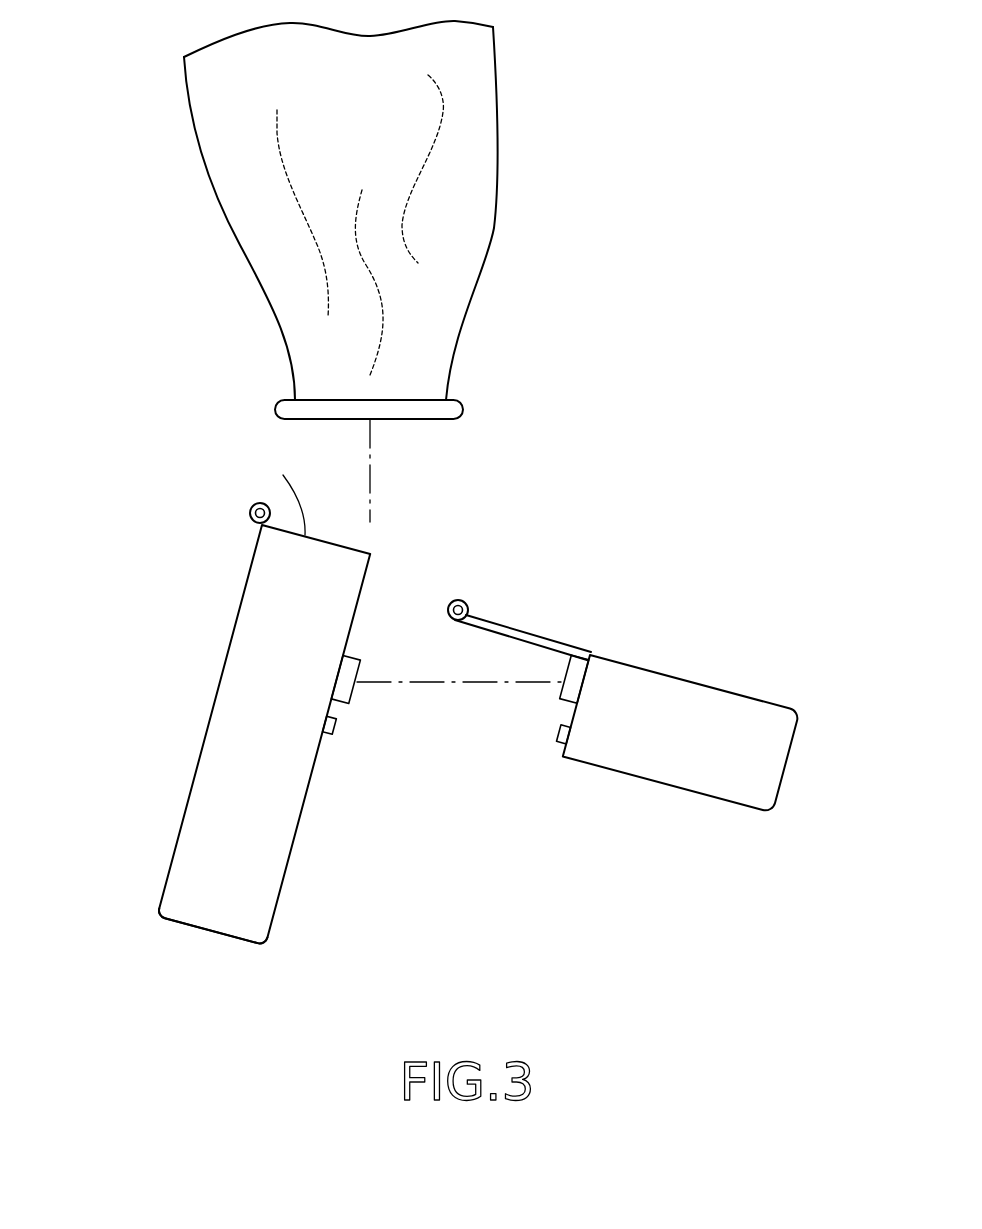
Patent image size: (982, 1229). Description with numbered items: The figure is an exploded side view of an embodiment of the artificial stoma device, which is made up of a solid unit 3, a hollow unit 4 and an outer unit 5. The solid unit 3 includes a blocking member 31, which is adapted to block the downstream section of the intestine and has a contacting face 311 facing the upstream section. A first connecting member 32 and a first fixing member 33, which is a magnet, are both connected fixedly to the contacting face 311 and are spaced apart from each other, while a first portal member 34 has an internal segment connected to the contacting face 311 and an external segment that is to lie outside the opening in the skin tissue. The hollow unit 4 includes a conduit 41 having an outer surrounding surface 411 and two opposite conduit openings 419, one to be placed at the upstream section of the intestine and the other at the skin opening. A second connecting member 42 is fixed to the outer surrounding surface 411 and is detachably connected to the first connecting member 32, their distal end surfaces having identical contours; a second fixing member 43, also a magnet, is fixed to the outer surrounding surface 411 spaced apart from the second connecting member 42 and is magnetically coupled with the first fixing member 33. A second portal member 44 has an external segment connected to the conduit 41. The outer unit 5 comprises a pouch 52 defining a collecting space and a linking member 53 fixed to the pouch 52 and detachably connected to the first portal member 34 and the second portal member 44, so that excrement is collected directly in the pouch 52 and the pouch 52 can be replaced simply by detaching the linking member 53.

The solid unit 3 is at (624, 698).
The blocking member 31 is at (660, 774).
The contacting face 311 is at (557, 753).
The first connecting member 32 is at (560, 693).
The first fixing member 33 is at (558, 735).
The first portal member 34 is at (462, 600).
The hollow unit 4 is at (242, 739).
The conduit 41 is at (238, 735).
The outer surrounding surface 411 is at (317, 758).
The conduit openings 419 is at (185, 1003).
The second connecting member 42 is at (362, 662).
The second fixing member 43 is at (332, 728).
The second portal member 44 is at (250, 513).
The outer unit 5 is at (415, 220).
The pouch 52 is at (480, 225).
The linking member 53 is at (453, 409).